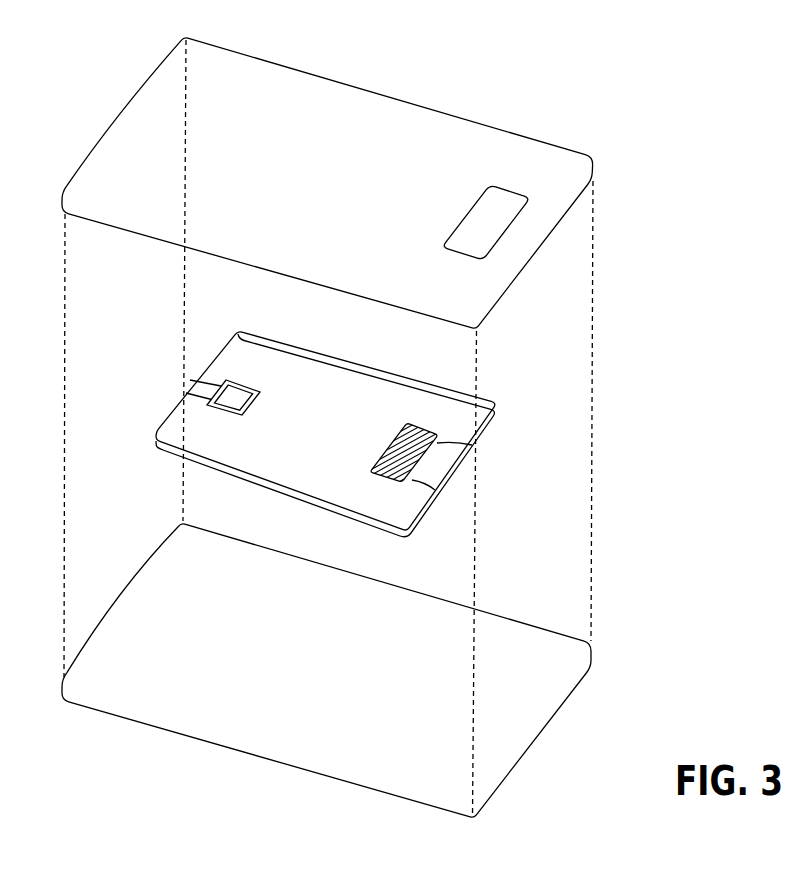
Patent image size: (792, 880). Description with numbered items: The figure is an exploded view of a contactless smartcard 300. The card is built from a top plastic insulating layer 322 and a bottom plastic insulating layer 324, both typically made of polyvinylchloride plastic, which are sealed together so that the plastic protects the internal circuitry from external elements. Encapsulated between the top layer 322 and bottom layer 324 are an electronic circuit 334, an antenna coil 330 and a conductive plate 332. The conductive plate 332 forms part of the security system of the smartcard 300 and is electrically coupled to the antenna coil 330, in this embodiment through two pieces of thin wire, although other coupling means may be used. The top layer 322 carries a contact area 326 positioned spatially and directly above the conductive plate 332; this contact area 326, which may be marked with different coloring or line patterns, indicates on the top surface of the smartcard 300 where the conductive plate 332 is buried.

The contactless smartcard 300 is at (555, 85).
The top plastic insulating layer 322 is at (360, 191).
The bottom plastic insulating layer 324 is at (548, 723).
The contact area 326 is at (497, 247).
The antenna coil 330 is at (325, 422).
The conductive plate 332 is at (383, 450).
The electronic circuit 334 is at (253, 405).